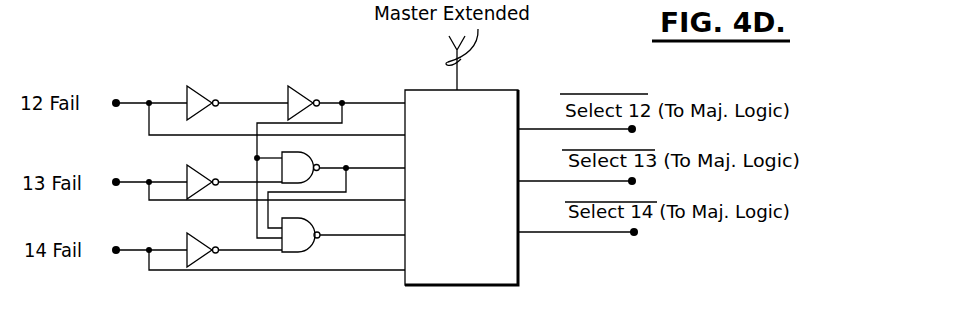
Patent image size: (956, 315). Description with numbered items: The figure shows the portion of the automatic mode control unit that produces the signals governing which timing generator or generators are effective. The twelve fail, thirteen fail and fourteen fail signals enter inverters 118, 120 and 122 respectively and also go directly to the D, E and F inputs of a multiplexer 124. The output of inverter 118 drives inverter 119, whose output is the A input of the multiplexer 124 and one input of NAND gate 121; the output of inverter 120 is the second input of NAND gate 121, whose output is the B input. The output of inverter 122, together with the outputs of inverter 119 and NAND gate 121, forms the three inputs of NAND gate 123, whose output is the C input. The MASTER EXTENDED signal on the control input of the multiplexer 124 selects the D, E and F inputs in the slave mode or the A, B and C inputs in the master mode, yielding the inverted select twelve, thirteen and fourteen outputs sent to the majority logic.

The inverter 118 is at (202, 91).
The inverter 119 is at (301, 90).
The inverter 120 is at (208, 176).
The NAND gate 121 is at (303, 164).
The inverter 122 is at (196, 243).
The NAND gate 123 is at (304, 232).
The multiplexer 124 is at (461, 187).